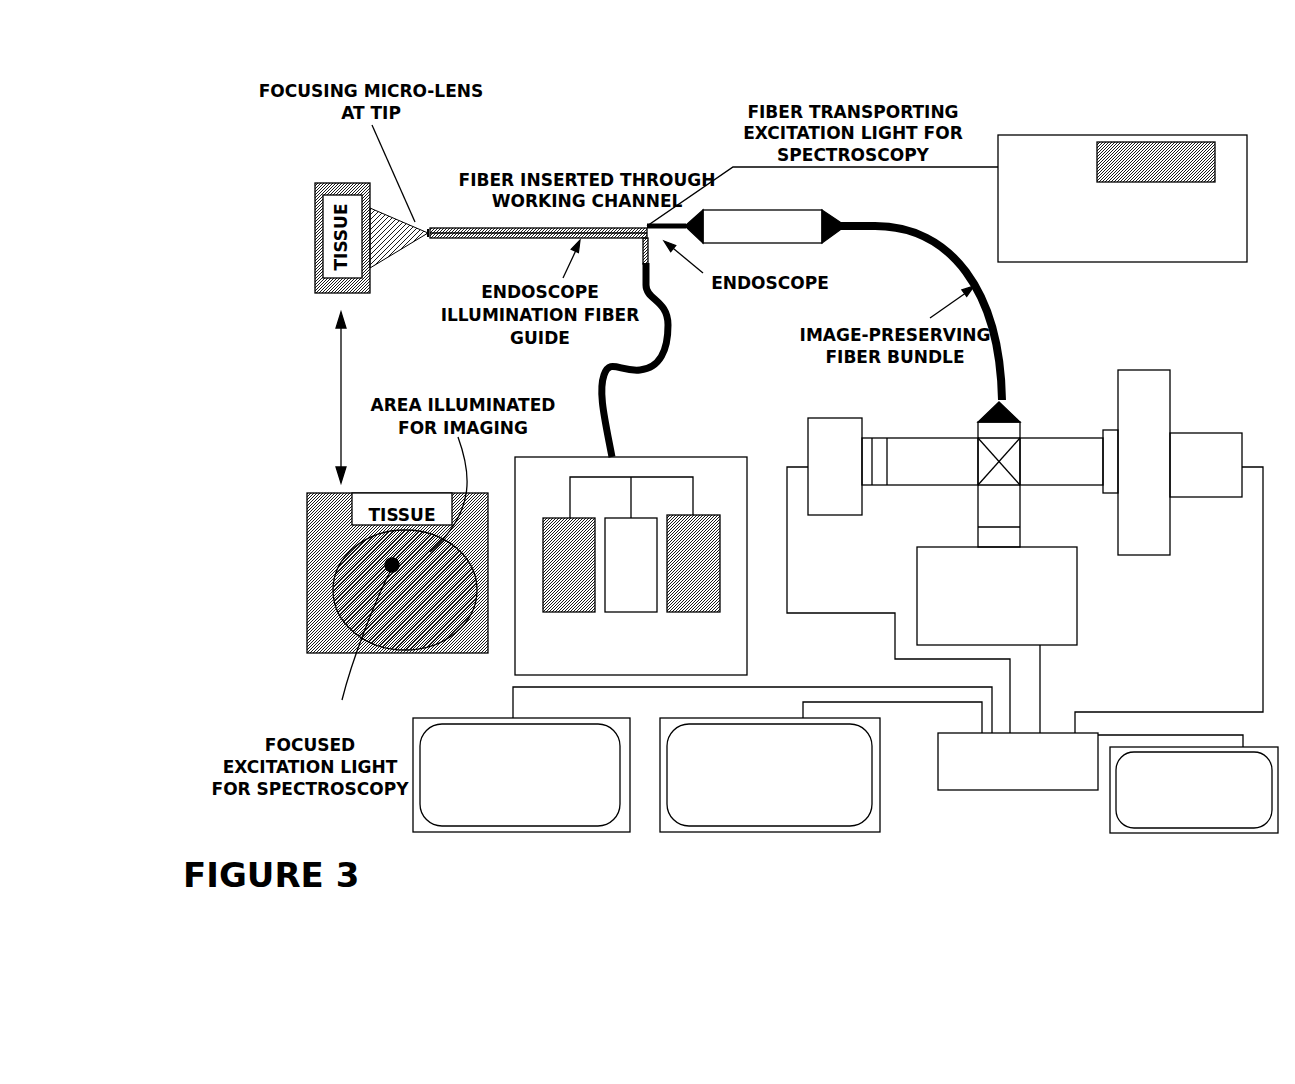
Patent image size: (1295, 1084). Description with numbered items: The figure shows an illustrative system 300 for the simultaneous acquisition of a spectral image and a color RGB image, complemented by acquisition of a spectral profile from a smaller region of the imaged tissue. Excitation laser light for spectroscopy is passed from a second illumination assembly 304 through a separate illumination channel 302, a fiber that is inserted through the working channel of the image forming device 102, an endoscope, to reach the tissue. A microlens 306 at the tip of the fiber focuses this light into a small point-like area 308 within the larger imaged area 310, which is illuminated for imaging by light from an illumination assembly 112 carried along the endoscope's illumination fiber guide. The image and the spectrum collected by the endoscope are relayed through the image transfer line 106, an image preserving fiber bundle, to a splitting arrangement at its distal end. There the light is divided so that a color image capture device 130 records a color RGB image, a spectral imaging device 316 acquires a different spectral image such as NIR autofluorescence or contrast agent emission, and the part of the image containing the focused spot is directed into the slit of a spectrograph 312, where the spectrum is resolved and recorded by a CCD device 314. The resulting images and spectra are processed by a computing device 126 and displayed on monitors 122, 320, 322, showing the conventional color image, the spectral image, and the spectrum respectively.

The system 300 is at (1265, 115).
The separate illumination channel 302 is at (733, 167).
The second illumination assembly 304 is at (1145, 135).
The microlens 306 is at (431, 215).
The image forming device 102 is at (447, 226).
The image transfer line 106 is at (945, 243).
The spectrograph 312 is at (1117, 372).
The recording device 314 is at (1203, 433).
The color image capture device 130 is at (833, 515).
The spectral imaging device 316 is at (1077, 592).
The illumination assembly 112 is at (713, 622).
The small area 308 is at (390, 566).
The imaged area 310 is at (348, 592).
The monitor 122 is at (517, 832).
The monitor 320 is at (770, 832).
The computing device 126 is at (1018, 793).
The monitor 322 is at (1192, 833).